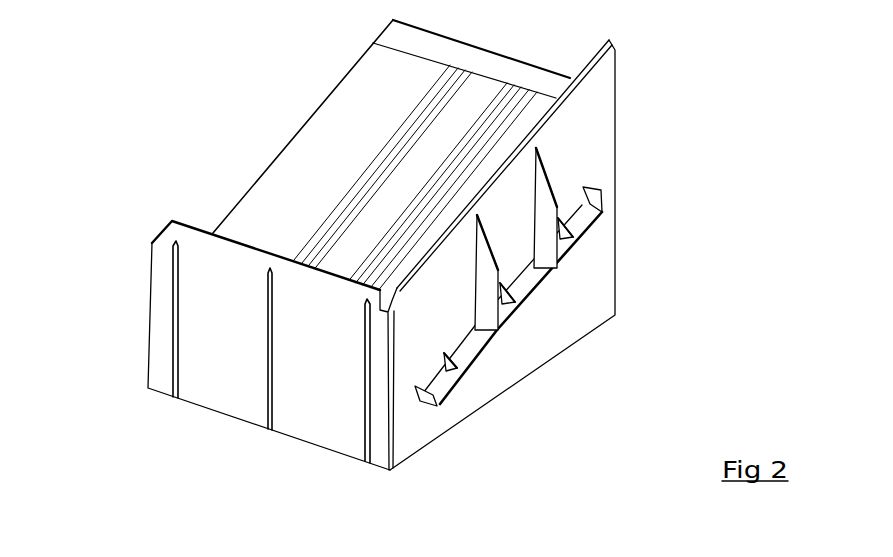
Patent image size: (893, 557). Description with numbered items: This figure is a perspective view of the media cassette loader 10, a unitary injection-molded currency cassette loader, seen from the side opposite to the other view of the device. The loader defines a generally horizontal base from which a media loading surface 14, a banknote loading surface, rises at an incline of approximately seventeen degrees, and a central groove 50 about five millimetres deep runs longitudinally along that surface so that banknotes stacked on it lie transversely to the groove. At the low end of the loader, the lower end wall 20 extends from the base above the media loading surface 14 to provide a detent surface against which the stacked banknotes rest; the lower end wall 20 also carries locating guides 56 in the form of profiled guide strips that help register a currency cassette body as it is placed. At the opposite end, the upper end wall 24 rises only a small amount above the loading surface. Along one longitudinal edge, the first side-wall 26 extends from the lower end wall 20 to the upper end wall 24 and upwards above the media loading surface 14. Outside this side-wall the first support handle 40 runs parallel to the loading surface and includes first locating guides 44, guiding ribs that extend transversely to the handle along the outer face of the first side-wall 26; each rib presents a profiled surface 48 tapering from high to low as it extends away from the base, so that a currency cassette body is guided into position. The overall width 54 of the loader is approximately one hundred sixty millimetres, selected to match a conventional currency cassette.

The media cassette loader 10 is at (60, 0).
The media loading surface 14 is at (307, 153).
The lower end wall 20 is at (165, 313).
The upper end wall 24 is at (462, 43).
The first side-wall 26 is at (605, 112).
The first support handle 40 is at (482, 352).
The first locating guides 44 is at (582, 207).
The profiled surface 48 is at (492, 257).
The central groove 50 is at (455, 145).
The width 54 is at (192, 0).
The locating guides 56 is at (368, 421).